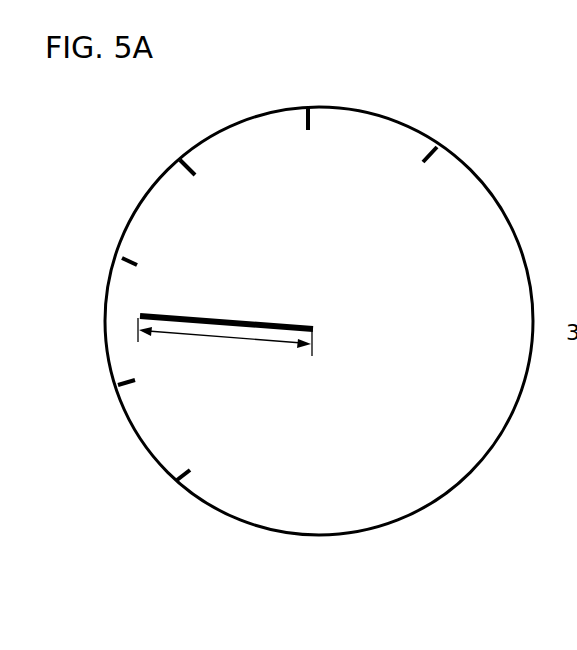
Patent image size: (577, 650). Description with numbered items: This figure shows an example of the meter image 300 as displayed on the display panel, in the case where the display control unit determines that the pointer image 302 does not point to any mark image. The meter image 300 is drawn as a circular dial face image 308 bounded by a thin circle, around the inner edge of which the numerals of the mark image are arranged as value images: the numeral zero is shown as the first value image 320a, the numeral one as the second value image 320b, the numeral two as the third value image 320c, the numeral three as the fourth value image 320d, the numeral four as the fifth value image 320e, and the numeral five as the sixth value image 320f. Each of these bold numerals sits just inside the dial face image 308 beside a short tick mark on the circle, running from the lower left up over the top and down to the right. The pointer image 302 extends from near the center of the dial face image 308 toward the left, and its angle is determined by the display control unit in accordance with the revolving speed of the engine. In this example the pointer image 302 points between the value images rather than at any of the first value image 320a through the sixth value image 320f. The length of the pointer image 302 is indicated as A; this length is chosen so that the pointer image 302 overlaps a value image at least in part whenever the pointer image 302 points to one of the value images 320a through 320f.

The meter image 300 is at (340, 630).
The pointer image 302 is at (248, 315).
The dial face image 308 is at (388, 488).
The first value image 320a is at (193, 445).
The second value image 320b is at (145, 373).
The third value image 320c is at (143, 255).
The fourth value image 320d is at (222, 173).
The fifth value image 320e is at (323, 148).
The sixth value image 320f is at (430, 172).